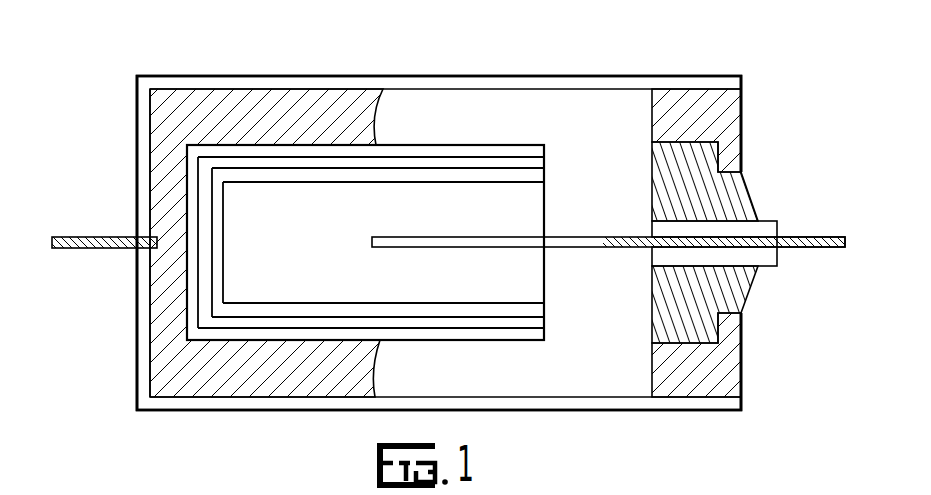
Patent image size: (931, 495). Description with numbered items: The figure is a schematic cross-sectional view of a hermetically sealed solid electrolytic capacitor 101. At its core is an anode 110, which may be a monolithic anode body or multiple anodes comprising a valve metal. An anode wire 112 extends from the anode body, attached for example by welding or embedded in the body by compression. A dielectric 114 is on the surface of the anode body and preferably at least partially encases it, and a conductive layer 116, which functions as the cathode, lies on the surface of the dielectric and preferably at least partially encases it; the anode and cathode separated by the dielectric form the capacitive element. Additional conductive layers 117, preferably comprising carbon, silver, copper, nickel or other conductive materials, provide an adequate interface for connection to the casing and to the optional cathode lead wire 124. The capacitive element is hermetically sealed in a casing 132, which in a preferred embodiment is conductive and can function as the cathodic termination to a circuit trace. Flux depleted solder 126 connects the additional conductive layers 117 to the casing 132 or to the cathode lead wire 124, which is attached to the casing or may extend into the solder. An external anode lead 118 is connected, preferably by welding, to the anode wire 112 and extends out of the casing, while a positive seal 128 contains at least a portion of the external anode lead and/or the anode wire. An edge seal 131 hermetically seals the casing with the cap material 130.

The hermetically sealed capacitor 101 is at (685, 58).
The anode 110 is at (490, 202).
The anode wire 112 is at (558, 250).
The dielectric 114 is at (511, 178).
The conductive layer 116 is at (522, 322).
The additional conductive layers 117 is at (476, 335).
The external anode lead 118 is at (822, 237).
The cathode lead wire 124 is at (65, 250).
The flux depleted solder 126 is at (175, 173).
The positive seal 128 is at (765, 258).
The cap material 130 is at (707, 128).
The edge seal 131 is at (722, 210).
The casing 132 is at (710, 403).